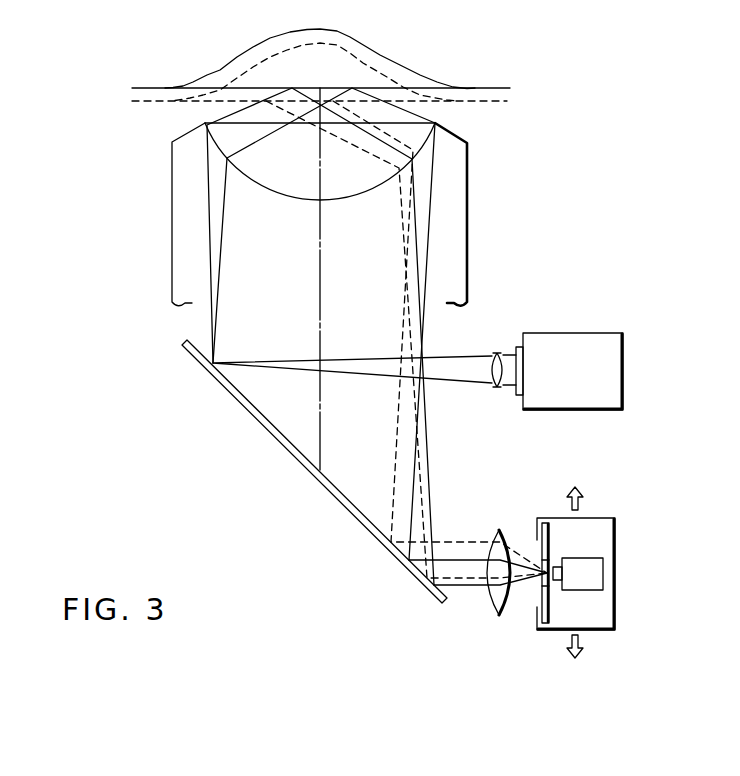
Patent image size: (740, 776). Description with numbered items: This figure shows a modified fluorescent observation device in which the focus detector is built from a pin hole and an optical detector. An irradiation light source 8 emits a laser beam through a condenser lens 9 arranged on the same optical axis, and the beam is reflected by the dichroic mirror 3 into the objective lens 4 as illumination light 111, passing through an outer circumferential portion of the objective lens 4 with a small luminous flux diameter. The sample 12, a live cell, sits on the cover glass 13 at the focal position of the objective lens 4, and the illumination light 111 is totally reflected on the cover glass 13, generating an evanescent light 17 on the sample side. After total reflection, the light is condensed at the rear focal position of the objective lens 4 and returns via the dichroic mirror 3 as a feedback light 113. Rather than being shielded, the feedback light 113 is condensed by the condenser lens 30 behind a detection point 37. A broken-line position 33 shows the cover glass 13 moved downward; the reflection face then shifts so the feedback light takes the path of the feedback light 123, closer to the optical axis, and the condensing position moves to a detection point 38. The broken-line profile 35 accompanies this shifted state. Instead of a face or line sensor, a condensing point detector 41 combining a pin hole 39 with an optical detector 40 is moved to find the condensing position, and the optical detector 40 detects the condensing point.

The dichroic mirror 3 is at (213, 380).
The objective lens 4 is at (250, 179).
The irradiation light source 8 is at (572, 333).
The condenser lens 9 is at (498, 353).
The sample 12 is at (358, 43).
The cover glass 13 is at (500, 88).
The evanescent light 17 is at (320, 88).
The condenser lens 30 is at (492, 608).
The position of the cover glass 33 is at (507, 101).
The shifted defect profile 35 is at (383, 63).
The detection point 37 is at (541, 590).
The detection point 38 is at (541, 556).
The pin hole 39 is at (548, 522).
The optical detector 40 is at (603, 575).
The condensing point detector 41 is at (614, 532).
The illumination light 111 is at (213, 275).
The feedback light 113 is at (420, 250).
The feedback light 123 is at (405, 409).